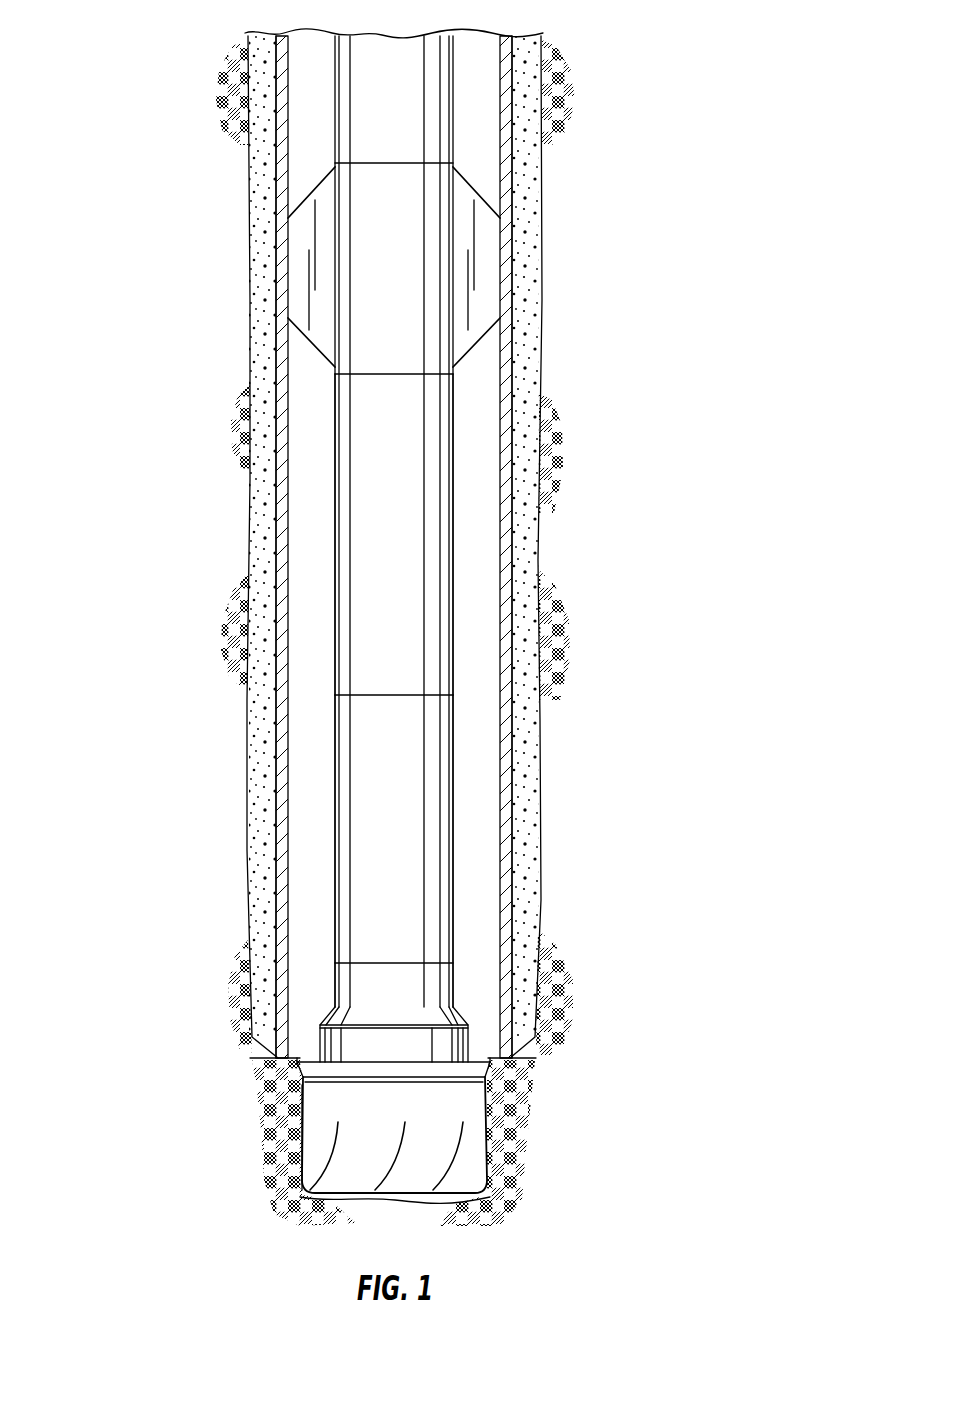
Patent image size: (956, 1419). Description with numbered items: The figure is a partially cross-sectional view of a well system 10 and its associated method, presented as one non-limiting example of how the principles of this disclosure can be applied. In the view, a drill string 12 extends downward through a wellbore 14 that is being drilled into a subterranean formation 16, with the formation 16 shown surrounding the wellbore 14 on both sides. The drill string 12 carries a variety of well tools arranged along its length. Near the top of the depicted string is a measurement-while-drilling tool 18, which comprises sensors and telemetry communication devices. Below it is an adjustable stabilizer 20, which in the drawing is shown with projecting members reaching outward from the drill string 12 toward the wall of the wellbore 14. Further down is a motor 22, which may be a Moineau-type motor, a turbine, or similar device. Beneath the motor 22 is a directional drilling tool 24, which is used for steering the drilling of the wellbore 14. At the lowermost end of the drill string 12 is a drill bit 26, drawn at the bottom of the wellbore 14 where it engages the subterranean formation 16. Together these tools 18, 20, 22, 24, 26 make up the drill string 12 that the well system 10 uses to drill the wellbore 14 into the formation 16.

The well system 10 is at (706, 81).
The drill string 12 is at (312, 488).
The wellbore 14 is at (477, 1105).
The subterranean formation 16 is at (121, 1202).
The measurement-while-drilling tool 18 is at (335, 97).
The adjustable stabilizer 20 is at (455, 257).
The motor 22 is at (455, 552).
The directional drilling tool 24 is at (333, 802).
The drill bit 26 is at (300, 1114).